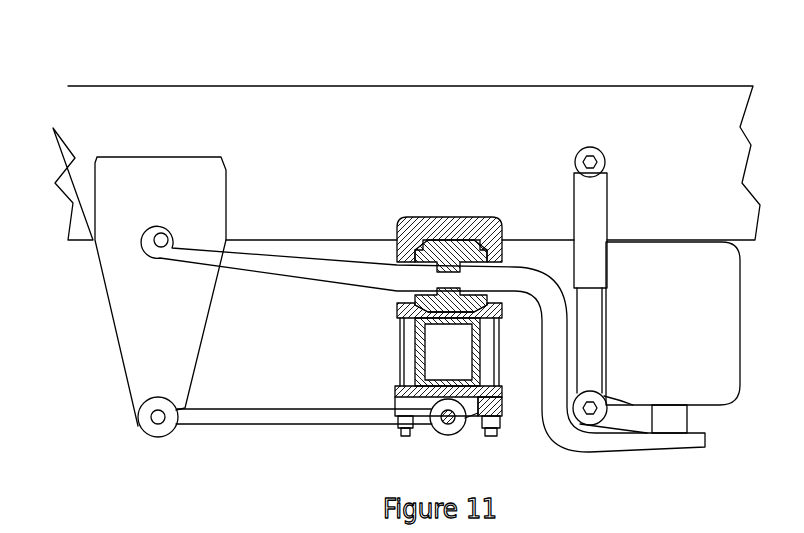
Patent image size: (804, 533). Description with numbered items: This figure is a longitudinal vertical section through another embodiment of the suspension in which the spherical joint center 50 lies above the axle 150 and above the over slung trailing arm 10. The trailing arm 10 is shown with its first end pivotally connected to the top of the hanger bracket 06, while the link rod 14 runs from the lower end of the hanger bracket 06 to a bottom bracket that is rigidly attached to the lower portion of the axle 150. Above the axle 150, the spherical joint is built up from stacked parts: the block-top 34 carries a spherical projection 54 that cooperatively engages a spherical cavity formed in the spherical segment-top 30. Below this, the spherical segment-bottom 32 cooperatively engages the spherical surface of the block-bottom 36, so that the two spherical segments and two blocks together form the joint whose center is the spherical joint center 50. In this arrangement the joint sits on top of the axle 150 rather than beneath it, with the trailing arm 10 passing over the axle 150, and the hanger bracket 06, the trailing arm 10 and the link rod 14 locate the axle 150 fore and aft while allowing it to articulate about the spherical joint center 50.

The trailing arm 10 is at (288, 267).
The link rod 14 is at (282, 422).
The spherical projection 54 is at (418, 265).
The hanger bracket 06 is at (173, 370).
The spherical segment-top 30 is at (476, 244).
The block-top 34 is at (410, 228).
The spherical joint center 50 is at (450, 240).
The spherical segment-bottom 32 is at (400, 310).
The axle 150 is at (422, 338).
The block-bottom 36 is at (480, 305).